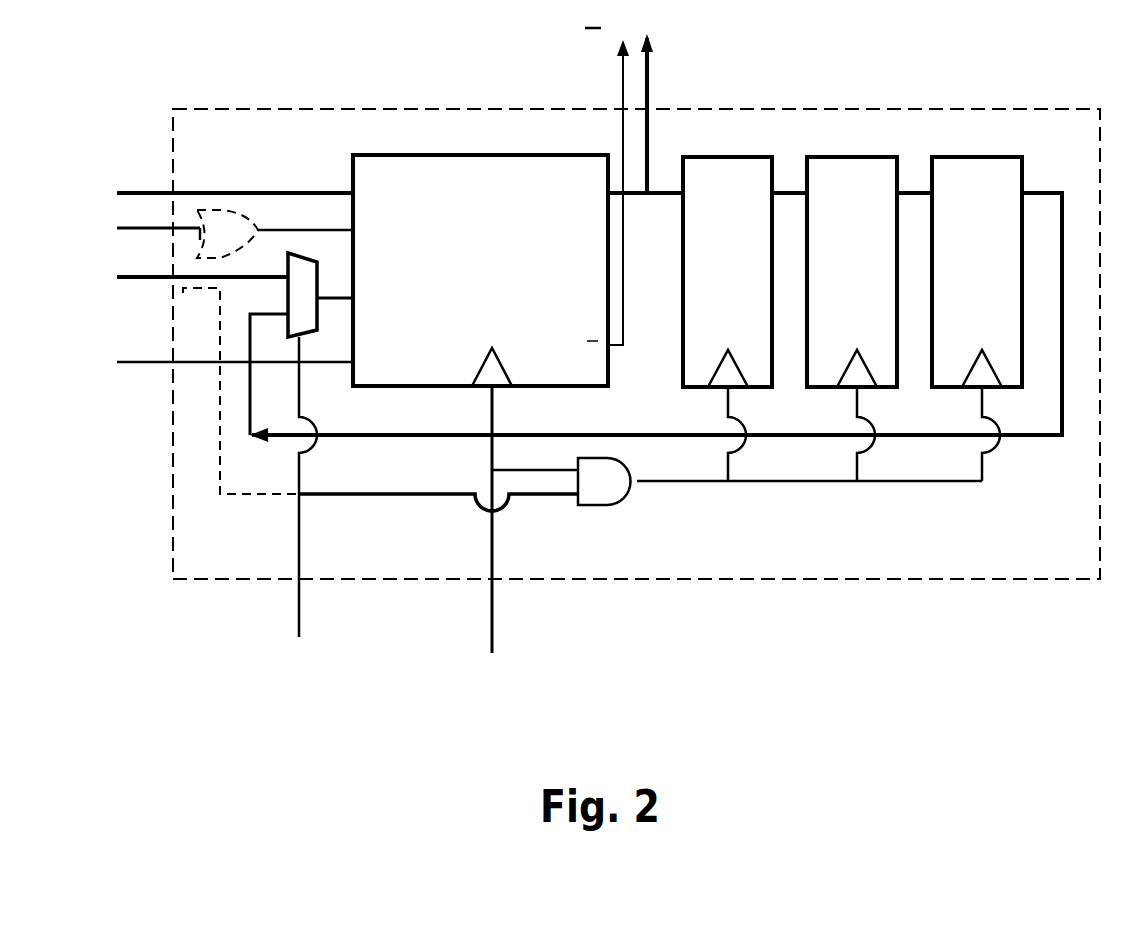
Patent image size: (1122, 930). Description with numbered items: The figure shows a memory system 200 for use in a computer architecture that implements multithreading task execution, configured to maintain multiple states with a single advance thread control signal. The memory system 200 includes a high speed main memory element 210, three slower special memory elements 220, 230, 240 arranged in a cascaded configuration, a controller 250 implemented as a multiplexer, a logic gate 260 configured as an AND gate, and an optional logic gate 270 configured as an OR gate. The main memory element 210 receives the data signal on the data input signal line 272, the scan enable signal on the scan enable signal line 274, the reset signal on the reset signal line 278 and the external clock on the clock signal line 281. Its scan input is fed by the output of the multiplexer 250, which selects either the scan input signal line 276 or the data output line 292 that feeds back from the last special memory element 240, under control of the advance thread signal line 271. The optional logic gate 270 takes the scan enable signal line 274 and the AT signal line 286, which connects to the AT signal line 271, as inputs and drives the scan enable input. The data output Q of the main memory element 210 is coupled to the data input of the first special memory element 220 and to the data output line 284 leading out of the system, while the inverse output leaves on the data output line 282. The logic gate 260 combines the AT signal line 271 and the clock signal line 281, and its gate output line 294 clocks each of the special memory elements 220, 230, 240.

The memory system 200 is at (1035, 105).
The main memory element 210 is at (477, 156).
The special memory element 220 is at (720, 157).
The special memory element 230 is at (815, 157).
The special memory element 240 is at (948, 157).
The controller (multiplexer) 250 is at (313, 260).
The logic gate (AND gate) 260 is at (607, 501).
The optional logic gate (OR gate) 270 is at (225, 210).
The advance thread (AT) signal line 271 is at (299, 557).
The data input (din) signal line 272 is at (325, 193).
The scan enable (Se) signal line 274 is at (117, 228).
The scan input (Si) signal line 276 is at (117, 275).
The reset signal line 278 is at (117, 360).
The clock (clk) signal line 281 is at (492, 557).
The inverse data output line 282 is at (623, 90).
The data output line 284 is at (647, 108).
The AT signal line (connecting signal line) 286 is at (220, 496).
The data output line (feedback data line) 292 is at (1030, 438).
The gate output line 294 is at (780, 484).